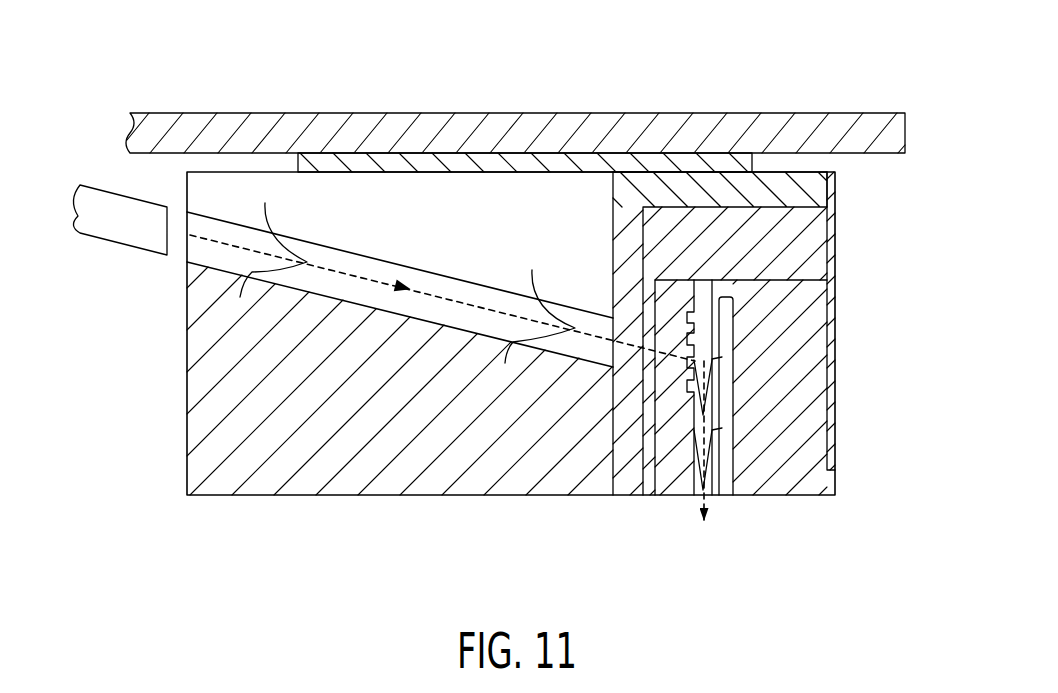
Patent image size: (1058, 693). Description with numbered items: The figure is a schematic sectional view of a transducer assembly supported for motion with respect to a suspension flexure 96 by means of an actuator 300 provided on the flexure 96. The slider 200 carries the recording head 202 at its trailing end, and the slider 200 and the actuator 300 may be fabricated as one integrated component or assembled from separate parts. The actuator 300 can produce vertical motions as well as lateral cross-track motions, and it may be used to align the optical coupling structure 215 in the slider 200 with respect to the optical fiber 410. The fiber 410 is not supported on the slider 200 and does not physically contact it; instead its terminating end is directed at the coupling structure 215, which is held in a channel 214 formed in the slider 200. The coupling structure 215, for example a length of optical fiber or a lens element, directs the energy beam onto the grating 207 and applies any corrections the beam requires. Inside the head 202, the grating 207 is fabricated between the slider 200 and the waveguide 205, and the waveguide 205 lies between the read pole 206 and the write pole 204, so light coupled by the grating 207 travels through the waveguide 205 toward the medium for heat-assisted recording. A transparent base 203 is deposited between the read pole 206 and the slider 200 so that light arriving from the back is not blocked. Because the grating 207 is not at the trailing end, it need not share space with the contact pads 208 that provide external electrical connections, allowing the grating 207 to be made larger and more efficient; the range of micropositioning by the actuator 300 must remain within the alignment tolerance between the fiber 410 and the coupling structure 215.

The flexure 96 is at (877, 128).
The actuator 300 is at (725, 162).
The optical fiber 410 is at (121, 223).
The slider 200 is at (348, 477).
The channel 214 is at (343, 242).
The coupling structure 215 is at (222, 237).
The transparent base 203 is at (630, 485).
The contact pads 208 is at (833, 231).
The recording head 202 is at (787, 385).
The read pole 206 is at (649, 503).
The grating 207 is at (679, 328).
The waveguide 205 is at (713, 503).
The write pole 204 is at (723, 498).